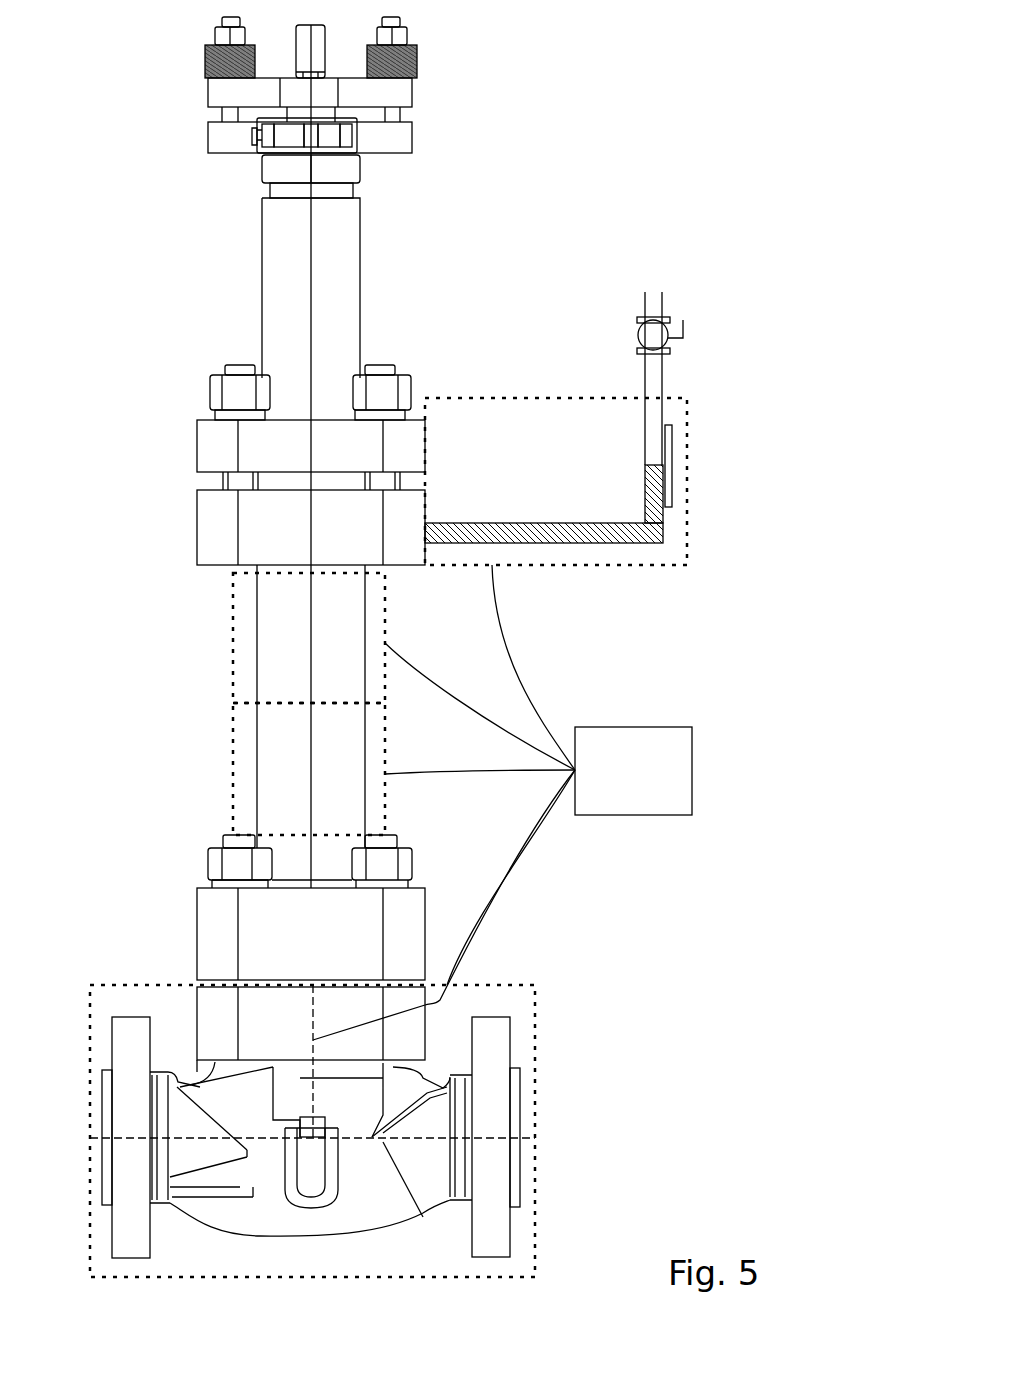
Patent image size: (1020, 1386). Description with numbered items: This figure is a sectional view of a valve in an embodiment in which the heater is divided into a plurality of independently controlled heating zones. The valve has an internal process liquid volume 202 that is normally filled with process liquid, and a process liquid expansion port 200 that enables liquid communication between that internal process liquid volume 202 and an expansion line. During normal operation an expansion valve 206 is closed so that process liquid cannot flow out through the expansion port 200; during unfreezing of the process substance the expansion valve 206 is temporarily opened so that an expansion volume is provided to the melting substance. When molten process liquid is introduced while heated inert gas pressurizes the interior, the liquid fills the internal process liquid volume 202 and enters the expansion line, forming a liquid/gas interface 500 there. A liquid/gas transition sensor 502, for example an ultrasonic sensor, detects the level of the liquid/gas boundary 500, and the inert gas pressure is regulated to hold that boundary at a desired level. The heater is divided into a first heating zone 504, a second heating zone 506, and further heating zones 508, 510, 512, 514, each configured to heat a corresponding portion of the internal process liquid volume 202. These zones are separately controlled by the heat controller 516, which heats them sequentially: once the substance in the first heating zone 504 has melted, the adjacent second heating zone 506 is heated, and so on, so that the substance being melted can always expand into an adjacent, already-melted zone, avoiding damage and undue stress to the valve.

The process liquid expansion port 200 is at (425, 517).
The internal process liquid volume 202 is at (620, 520).
The expansion valve 206 is at (633, 338).
The liquid/gas interface 500 is at (657, 465).
The liquid/gas transition sensor 502 is at (672, 478).
The first heating zone 504 is at (615, 565).
The second heating zone 506 is at (233, 640).
The heating zone 508 is at (233, 753).
The heating zone 510 is at (535, 1022).
The heating zone 512 is at (142, 985).
The heating zone 514 is at (535, 1177).
The heat controller 516 is at (502, 841).